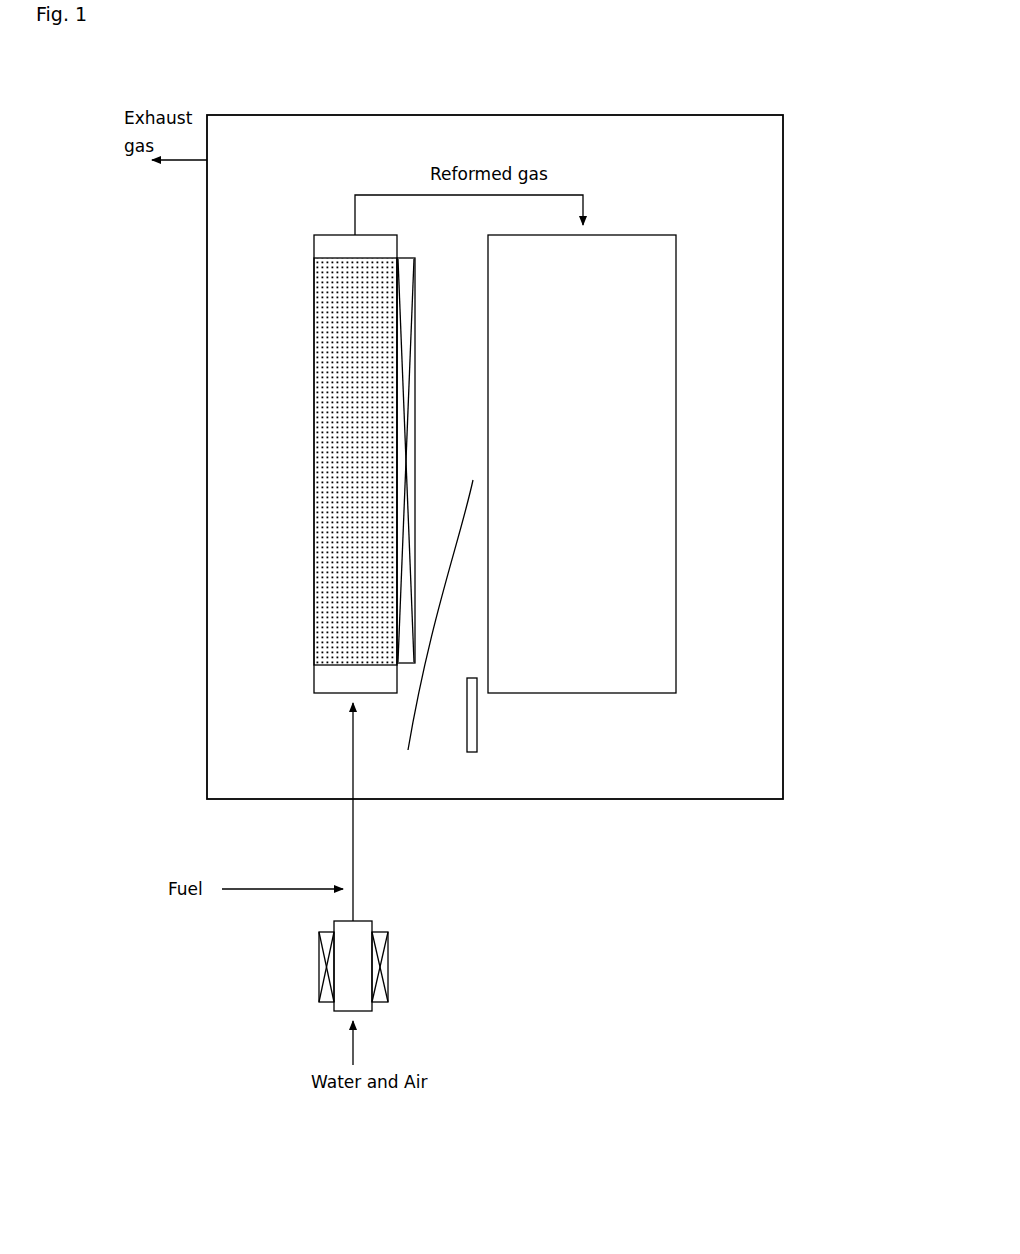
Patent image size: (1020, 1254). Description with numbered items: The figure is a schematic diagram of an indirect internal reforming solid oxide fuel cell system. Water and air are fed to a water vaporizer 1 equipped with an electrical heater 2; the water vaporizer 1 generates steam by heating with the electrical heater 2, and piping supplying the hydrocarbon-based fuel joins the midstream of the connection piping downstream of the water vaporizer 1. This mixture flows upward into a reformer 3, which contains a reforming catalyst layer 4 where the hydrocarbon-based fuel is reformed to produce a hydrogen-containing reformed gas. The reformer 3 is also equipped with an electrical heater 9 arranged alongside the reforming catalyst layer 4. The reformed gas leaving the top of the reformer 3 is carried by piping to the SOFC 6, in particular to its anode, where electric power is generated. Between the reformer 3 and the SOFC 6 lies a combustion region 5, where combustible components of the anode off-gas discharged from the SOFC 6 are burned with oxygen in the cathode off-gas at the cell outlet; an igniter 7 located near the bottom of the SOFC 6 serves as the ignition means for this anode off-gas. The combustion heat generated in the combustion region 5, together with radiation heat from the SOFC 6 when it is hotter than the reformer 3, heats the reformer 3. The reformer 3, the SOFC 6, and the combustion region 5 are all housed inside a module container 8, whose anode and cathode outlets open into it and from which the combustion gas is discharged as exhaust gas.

The water vaporizer 1 is at (333, 1011).
The electrical heater 2 is at (322, 957).
The reformer 3 is at (315, 235).
The reforming catalyst layer 4 is at (372, 282).
The combustion region 5 is at (435, 631).
The SOFC 6 is at (652, 237).
The igniter 7 is at (478, 745).
The module container 8 is at (601, 800).
The electrical heater 9 is at (407, 386).